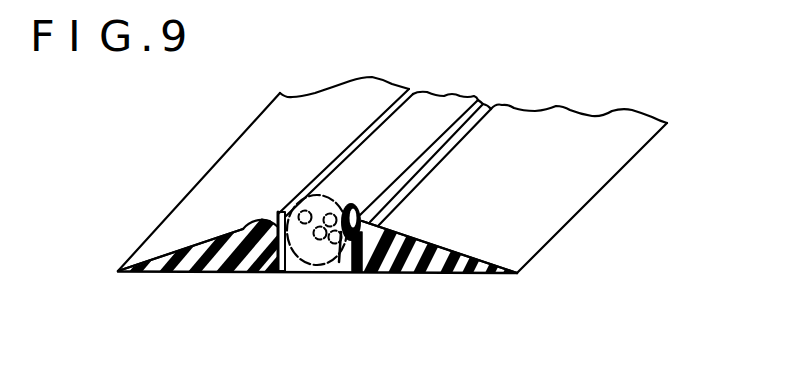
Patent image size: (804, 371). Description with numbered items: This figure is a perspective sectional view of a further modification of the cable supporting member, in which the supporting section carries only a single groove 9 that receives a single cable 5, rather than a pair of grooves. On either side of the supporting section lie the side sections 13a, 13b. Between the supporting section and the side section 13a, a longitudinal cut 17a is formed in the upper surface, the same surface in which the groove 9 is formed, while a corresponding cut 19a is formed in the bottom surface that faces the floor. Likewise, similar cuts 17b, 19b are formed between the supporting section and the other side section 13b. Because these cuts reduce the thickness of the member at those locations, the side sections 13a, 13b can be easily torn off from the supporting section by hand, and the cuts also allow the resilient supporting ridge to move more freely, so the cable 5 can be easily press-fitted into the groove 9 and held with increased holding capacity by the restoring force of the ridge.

The cable 5 is at (433, 115).
The single groove 9 is at (300, 270).
The side section 13a is at (192, 270).
The side section 13b is at (420, 270).
The cut 17a is at (273, 220).
The cut 17b is at (337, 270).
The cut 19a is at (271, 275).
The cut 19b is at (361, 277).